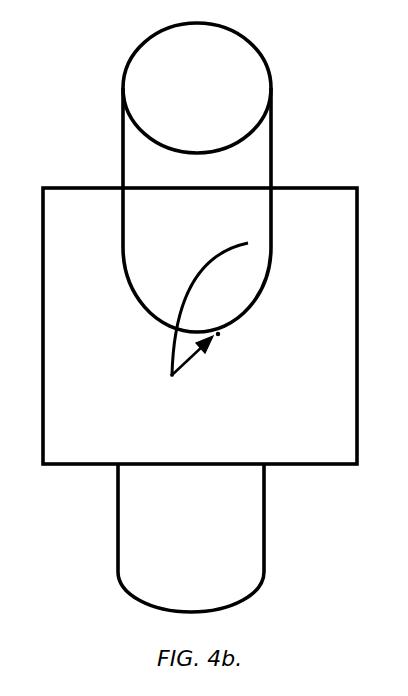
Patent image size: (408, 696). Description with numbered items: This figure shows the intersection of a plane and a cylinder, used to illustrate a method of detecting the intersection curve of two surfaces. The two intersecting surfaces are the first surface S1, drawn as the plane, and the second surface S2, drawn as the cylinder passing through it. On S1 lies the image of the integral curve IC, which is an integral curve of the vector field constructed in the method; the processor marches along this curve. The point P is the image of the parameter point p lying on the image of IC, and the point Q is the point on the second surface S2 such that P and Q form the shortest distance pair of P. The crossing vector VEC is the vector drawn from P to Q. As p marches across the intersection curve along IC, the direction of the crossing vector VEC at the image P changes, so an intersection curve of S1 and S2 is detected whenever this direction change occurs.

The first surface S1 is at (219, 326).
The second surface S2 is at (212, 317).
The integral curve IC is at (200, 277).
The point Q is at (220, 348).
The point P is at (156, 386).
The crossing vector VEC is at (193, 368).